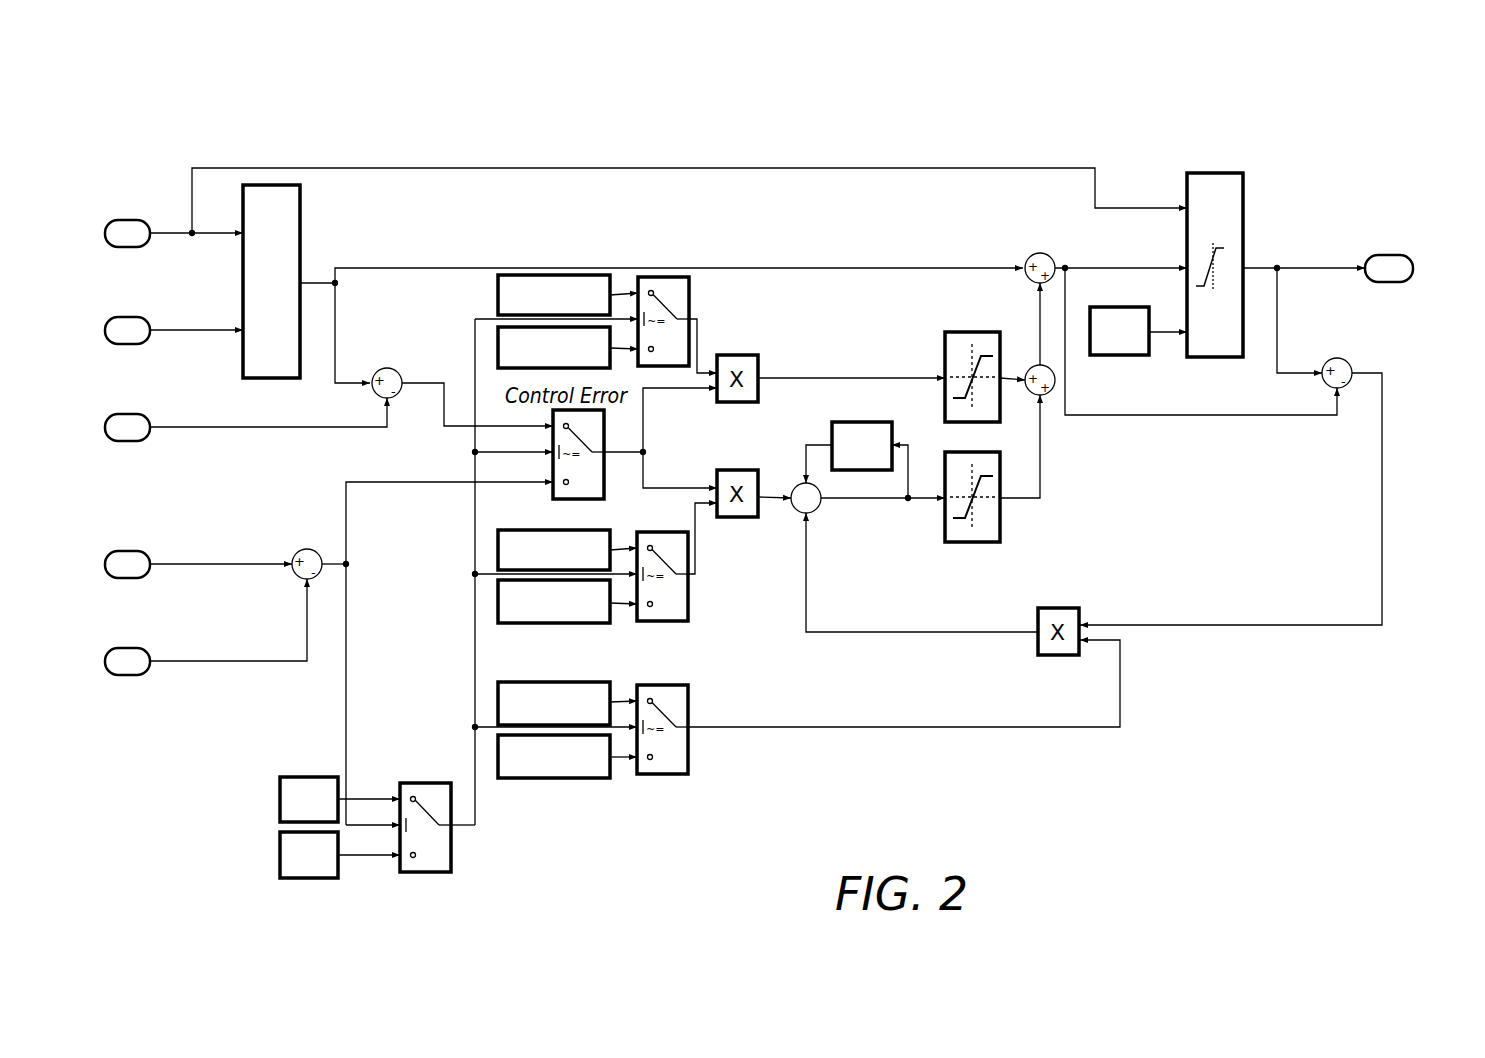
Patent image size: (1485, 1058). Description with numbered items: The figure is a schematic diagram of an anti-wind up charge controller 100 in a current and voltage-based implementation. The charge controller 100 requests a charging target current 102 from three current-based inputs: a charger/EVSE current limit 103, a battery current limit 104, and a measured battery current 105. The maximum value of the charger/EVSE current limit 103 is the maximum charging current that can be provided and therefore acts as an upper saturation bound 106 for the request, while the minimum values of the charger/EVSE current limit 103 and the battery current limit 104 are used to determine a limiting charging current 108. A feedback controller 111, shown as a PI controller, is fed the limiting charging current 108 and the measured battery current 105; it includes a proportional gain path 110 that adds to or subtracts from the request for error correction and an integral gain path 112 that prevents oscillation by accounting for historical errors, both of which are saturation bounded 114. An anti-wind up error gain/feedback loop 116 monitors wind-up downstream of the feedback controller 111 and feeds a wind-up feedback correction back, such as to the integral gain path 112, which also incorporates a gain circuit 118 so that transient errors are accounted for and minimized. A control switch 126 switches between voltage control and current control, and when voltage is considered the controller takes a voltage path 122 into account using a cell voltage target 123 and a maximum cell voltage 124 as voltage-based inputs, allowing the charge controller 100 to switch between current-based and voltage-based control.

The anti-wind up charge controller 100 is at (1072, 132).
The charging target current 102 is at (1392, 256).
The charger/EVSE current limit 103 is at (130, 221).
The battery current limit 104 is at (130, 318).
The measured battery current 105 is at (130, 415).
The upper saturation bound 106 is at (1202, 193).
The limiting charging current 108 is at (278, 197).
The proportional gain path (Kp) 110 is at (660, 283).
The feedback controller 111 is at (593, 828).
The integral gain path (Ki) 112 is at (675, 600).
The saturation bound 114 is at (963, 332).
The anti-wind up error gain/feedback loop 116 is at (1275, 625).
The gain circuit 118 is at (857, 470).
The voltage path 122 is at (423, 872).
The cell voltage target 123 is at (130, 552).
The maximum cell voltage 124 is at (130, 649).
The control switch 126 is at (652, 775).